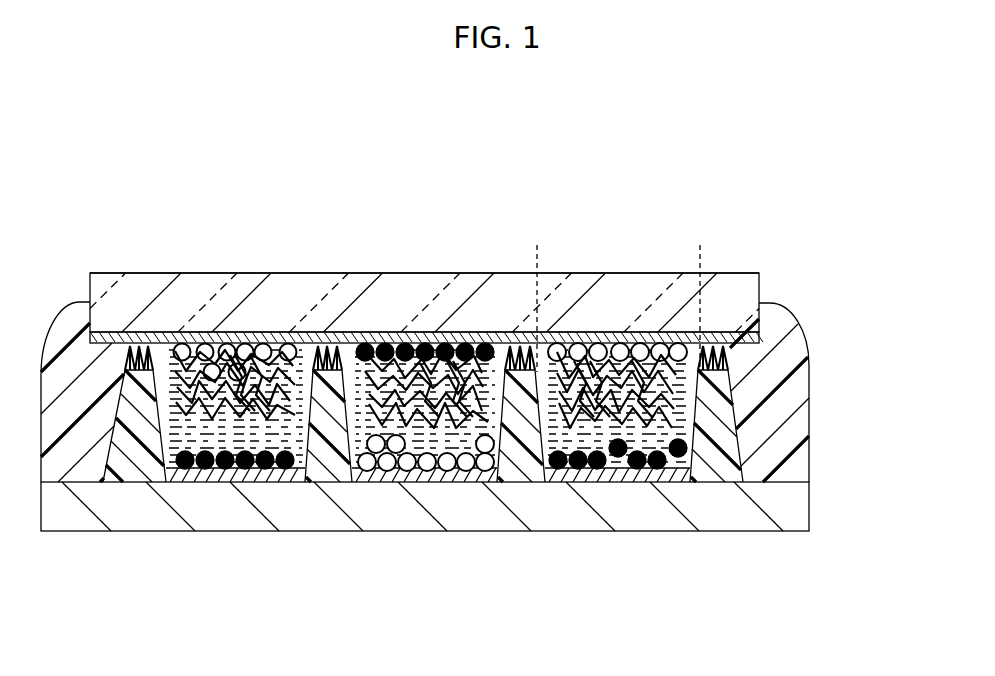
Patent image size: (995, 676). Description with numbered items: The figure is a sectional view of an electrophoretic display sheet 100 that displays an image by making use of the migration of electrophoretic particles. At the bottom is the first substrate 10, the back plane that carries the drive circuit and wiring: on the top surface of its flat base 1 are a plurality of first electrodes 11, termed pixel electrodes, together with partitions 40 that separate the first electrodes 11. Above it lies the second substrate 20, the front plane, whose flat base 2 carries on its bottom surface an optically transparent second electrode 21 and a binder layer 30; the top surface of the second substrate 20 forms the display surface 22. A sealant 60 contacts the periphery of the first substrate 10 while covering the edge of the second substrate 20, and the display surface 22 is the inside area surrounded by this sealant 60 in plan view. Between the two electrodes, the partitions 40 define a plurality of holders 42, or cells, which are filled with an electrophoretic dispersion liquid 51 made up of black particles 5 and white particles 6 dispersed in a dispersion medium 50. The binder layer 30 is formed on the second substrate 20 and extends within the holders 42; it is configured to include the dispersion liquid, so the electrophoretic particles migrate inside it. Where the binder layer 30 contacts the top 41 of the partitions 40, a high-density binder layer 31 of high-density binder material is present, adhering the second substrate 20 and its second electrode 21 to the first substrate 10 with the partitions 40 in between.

The electrophoretic display sheet 100 is at (783, 209).
The first substrate 10 is at (480, 534).
The flat base 1 is at (780, 512).
The first electrodes 11 is at (670, 484).
The partitions 40 is at (718, 452).
The top of the partitions 41 is at (738, 392).
The sealant 60 is at (88, 300).
The second substrate 20 is at (499, 275).
The flat base 2 is at (748, 292).
The display surface 22 is at (216, 273).
The second electrode 21 is at (745, 330).
The high-density binder layer 31 is at (160, 352).
The holders 42 is at (537, 243).
The electrophoretic dispersion liquid 51 is at (592, 595).
The dispersion medium 50 is at (538, 445).
The black particles 5 is at (183, 463).
The white particles 6 is at (486, 468).
The binder layer 30 is at (280, 355).